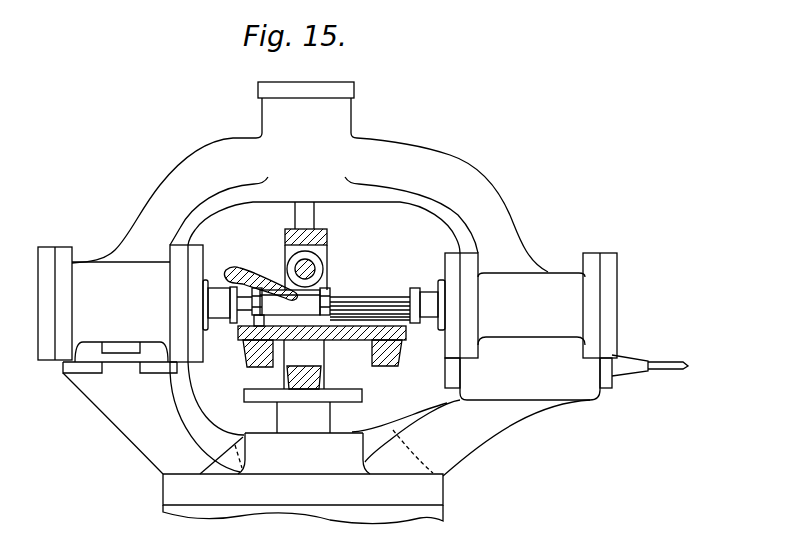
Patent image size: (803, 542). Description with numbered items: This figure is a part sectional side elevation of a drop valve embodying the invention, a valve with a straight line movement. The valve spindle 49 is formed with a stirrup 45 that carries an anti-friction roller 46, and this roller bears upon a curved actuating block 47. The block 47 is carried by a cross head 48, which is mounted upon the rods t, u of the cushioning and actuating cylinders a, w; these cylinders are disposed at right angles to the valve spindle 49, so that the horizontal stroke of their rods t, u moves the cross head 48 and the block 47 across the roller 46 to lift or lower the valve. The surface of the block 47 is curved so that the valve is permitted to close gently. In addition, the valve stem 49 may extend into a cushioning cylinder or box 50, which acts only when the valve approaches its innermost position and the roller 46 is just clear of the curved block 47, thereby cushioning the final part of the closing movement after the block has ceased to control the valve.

The cushioning cylinder or box 50 is at (337, 303).
The stirrup 45 is at (322, 249).
The anti-friction roller 46 is at (320, 272).
The curved actuating block 47 is at (238, 286).
The cross head 48 is at (300, 320).
The valve spindle 49 is at (323, 385).
The rod u is at (377, 302).
The cushioning cylinder a is at (107, 310).
The actuating cylinder w is at (574, 326).
The rod t is at (233, 322).